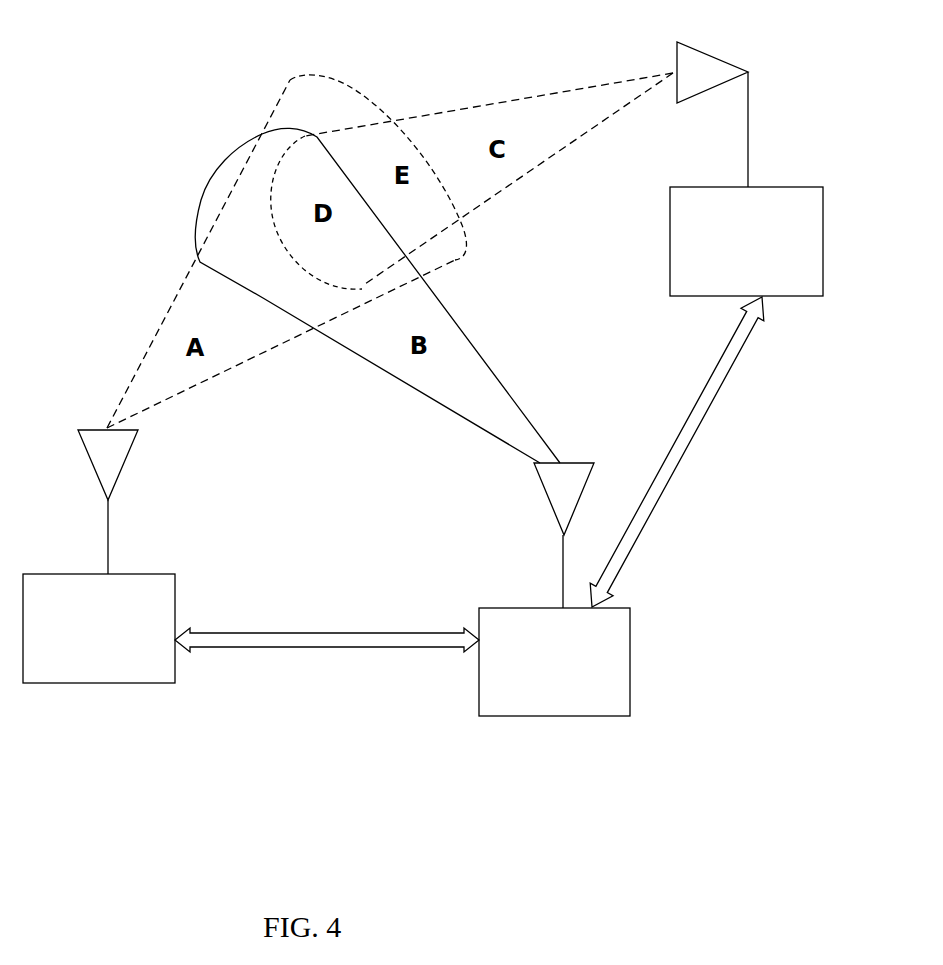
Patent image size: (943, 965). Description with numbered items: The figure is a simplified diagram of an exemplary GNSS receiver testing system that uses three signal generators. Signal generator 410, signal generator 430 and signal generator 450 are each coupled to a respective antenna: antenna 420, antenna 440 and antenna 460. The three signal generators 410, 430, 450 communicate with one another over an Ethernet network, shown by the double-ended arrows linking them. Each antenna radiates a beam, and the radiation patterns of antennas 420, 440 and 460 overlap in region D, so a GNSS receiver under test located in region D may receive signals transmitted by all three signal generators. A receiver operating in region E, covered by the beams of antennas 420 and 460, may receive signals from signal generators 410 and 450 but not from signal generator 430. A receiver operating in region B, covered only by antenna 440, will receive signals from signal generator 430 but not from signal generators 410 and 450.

The signal generator 410 is at (150, 588).
The antenna 420 is at (110, 458).
The signal generator 430 is at (512, 620).
The antenna 440 is at (563, 480).
The signal generator 450 is at (695, 202).
The antenna 460 is at (708, 72).